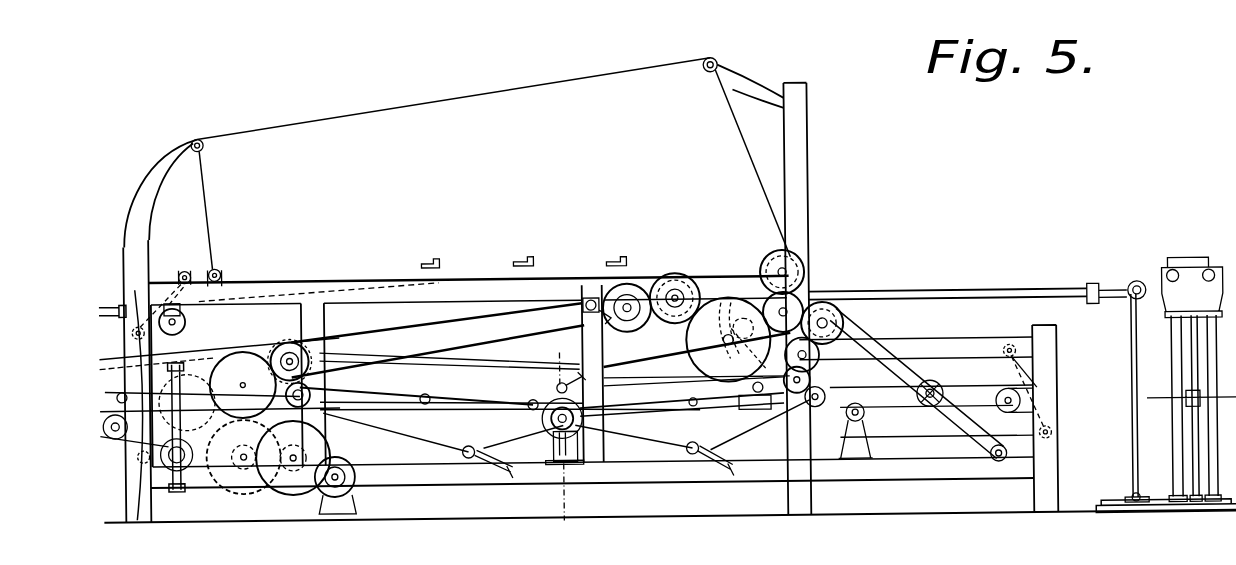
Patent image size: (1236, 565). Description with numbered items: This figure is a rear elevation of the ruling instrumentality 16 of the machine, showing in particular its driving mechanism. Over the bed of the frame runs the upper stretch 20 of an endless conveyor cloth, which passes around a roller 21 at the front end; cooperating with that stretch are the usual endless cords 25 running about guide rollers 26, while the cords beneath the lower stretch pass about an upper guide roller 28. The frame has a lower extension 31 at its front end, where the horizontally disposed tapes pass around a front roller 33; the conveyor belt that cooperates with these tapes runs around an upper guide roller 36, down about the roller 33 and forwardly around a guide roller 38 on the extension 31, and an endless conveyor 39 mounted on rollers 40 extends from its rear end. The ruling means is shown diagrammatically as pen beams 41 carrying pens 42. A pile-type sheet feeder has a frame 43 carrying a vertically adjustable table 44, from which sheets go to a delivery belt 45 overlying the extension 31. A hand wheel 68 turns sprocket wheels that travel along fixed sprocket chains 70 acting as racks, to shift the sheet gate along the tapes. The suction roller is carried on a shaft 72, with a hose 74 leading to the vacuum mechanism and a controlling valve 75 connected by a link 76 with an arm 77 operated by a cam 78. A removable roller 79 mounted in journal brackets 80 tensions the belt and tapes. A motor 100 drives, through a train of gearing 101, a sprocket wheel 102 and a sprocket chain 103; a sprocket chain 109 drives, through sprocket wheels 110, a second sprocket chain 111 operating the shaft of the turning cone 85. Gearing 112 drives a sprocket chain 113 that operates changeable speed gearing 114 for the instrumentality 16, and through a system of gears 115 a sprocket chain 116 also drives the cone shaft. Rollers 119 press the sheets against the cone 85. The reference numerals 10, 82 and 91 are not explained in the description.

The frame 10 is at (667, 307).
The instrumentality 16 is at (485, 225).
The upper stretch 20 is at (133, 332).
The roller 21 is at (808, 300).
The endless cords 25 is at (210, 208).
The guide rollers 26 is at (478, 92).
The upper guide roller 28 is at (186, 270).
The extension 31 is at (934, 476).
The front roller 33 is at (1040, 408).
The upper guide roller 36 is at (1010, 348).
The guide roller 38 is at (1052, 436).
The endless conveyor 39 is at (510, 411).
The rollers 40 is at (443, 445).
The pen beams 41 is at (430, 260).
The pens 42 is at (420, 266).
The frame 43 is at (1172, 457).
The vertically adjustable table 44 is at (1150, 403).
The delivery belt 45 is at (992, 292).
The hand wheel 68 is at (937, 411).
The sprocket chains 70 is at (968, 392).
The shaft 72 is at (822, 412).
The hose 74 is at (866, 360).
The controlling valve 75 is at (664, 340).
The link 76 is at (730, 353).
The arm 77 is at (584, 320).
The cam 78 is at (636, 296).
The removable roller 79 is at (462, 280).
The journal brackets 80 is at (866, 443).
The pulley 82 is at (186, 313).
The turning cone 85 is at (682, 421).
The pulley 91 is at (550, 425).
The motor 100 is at (355, 476).
The train of gearing 101 is at (280, 486).
The sprocket wheel 102 is at (182, 486).
The sprocket chain 103 is at (137, 419).
The sprocket chain 109 is at (234, 391).
The sprocket wheels 110 is at (439, 378).
The second sprocket chain 111 is at (410, 392).
The gearing 112 is at (282, 348).
The sprocket chain 113 is at (392, 332).
The changeable speed gearing 114 is at (758, 300).
The system of gears 115 is at (860, 345).
The sprocket chain 116 is at (756, 424).
The rollers 119 is at (556, 388).